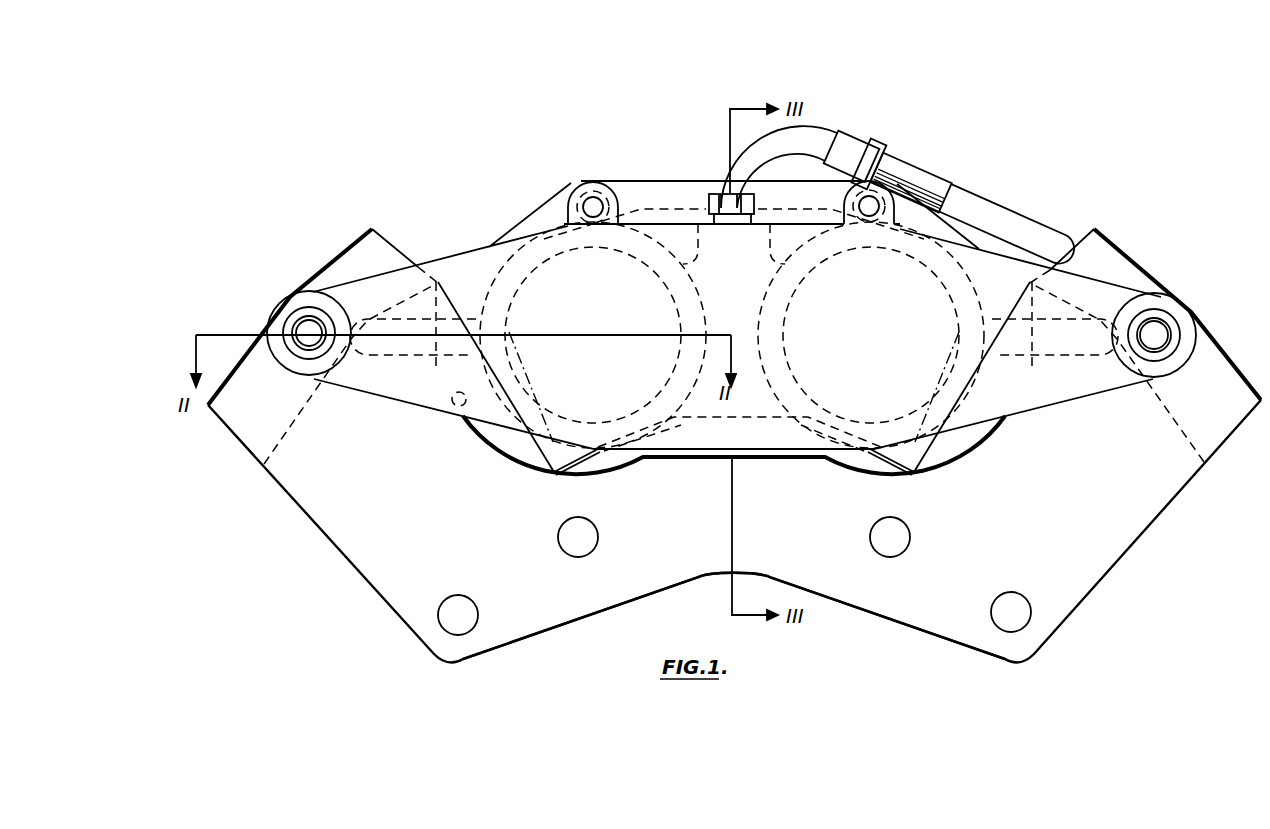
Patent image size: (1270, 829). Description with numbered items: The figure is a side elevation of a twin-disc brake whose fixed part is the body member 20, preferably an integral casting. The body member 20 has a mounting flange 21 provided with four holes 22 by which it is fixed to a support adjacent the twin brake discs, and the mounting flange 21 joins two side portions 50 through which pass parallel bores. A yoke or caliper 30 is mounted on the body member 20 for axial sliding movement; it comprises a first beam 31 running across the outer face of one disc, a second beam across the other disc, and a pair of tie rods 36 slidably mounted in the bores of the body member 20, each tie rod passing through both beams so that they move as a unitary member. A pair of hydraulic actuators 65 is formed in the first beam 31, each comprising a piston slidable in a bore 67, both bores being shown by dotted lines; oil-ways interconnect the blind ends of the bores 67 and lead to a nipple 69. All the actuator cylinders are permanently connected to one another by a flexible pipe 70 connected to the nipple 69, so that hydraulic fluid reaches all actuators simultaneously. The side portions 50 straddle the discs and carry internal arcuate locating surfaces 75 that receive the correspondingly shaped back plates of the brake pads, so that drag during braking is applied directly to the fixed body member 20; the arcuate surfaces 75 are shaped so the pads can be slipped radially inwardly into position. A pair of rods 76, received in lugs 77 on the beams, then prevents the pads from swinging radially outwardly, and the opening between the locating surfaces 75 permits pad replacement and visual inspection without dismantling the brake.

The body member 20 is at (327, 537).
The mounting flange 21 is at (608, 605).
The holes 22 is at (455, 632).
The yoke or caliper 30 is at (1118, 272).
The first beam 31 is at (672, 221).
The tie rods 36 is at (303, 325).
The side portions 50 is at (345, 248).
The hydraulic actuators 65 is at (610, 329).
The bore 67 is at (527, 282).
The nipple 69 is at (723, 190).
The flexible pipe 70 is at (1030, 222).
The arcuate locating surfaces 75 is at (458, 405).
The rods 76 is at (584, 200).
The lugs 77 is at (618, 192).